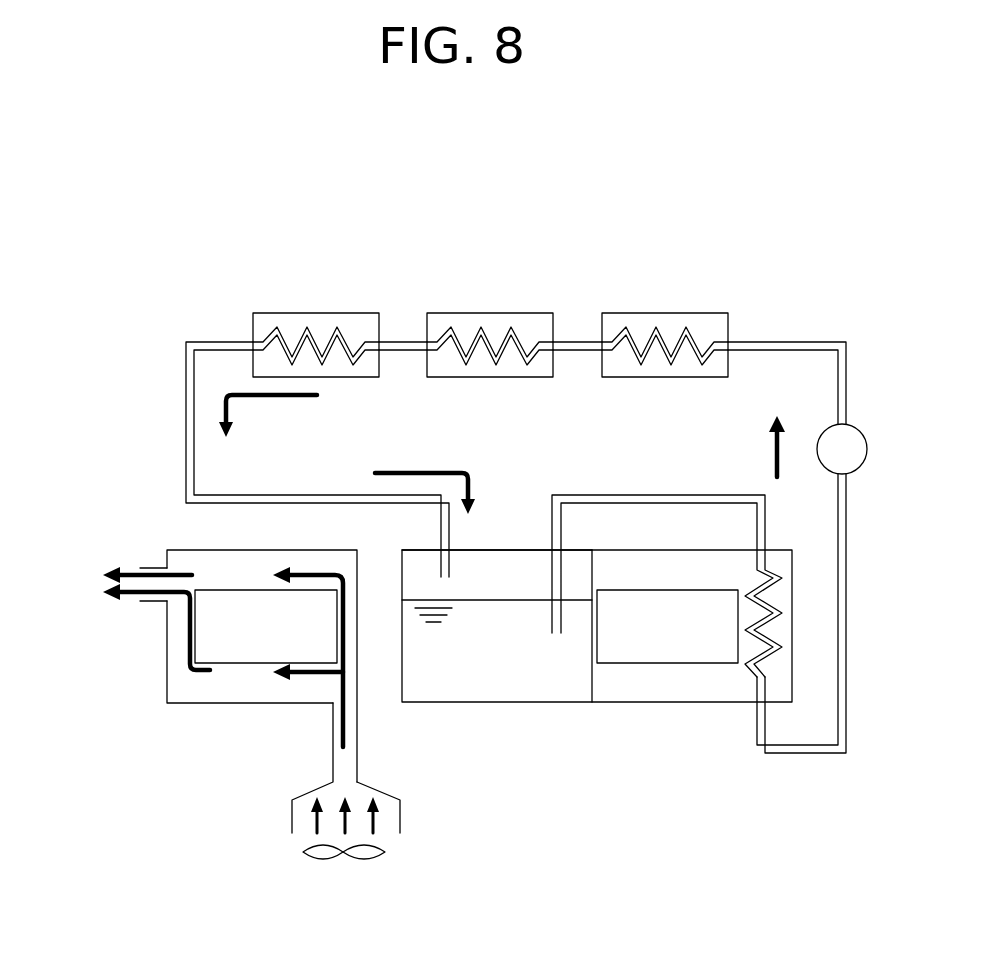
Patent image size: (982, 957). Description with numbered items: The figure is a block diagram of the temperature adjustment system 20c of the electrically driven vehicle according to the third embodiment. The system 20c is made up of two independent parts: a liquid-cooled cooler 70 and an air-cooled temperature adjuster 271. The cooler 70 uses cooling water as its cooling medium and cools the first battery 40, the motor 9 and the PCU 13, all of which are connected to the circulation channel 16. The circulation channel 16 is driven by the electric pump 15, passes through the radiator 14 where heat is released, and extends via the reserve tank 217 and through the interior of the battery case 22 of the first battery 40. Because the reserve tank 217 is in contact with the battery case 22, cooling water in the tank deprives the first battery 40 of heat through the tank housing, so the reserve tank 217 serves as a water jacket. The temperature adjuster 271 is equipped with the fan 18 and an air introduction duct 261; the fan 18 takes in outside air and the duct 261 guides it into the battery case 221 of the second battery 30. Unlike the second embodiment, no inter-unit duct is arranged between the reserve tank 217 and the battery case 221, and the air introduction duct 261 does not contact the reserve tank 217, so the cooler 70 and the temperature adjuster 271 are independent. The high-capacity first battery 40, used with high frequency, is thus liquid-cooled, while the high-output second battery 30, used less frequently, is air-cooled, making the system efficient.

The temperature adjustment system 20c is at (192, 207).
The motor 9 is at (350, 312).
The PCU 13 is at (523, 312).
The radiator 14 is at (703, 312).
The electric pump 15 is at (860, 427).
The circulation channel 16 is at (657, 494).
The fan 18 is at (365, 861).
The battery case 22 is at (712, 702).
The second battery 30 is at (253, 663).
The first battery 40 is at (658, 663).
The cooler 70 is at (413, 441).
The reserve tank 217 is at (504, 548).
The battery case 221 is at (167, 673).
The air introduction duct 261 is at (358, 752).
The temperature adjuster 271 is at (147, 494).